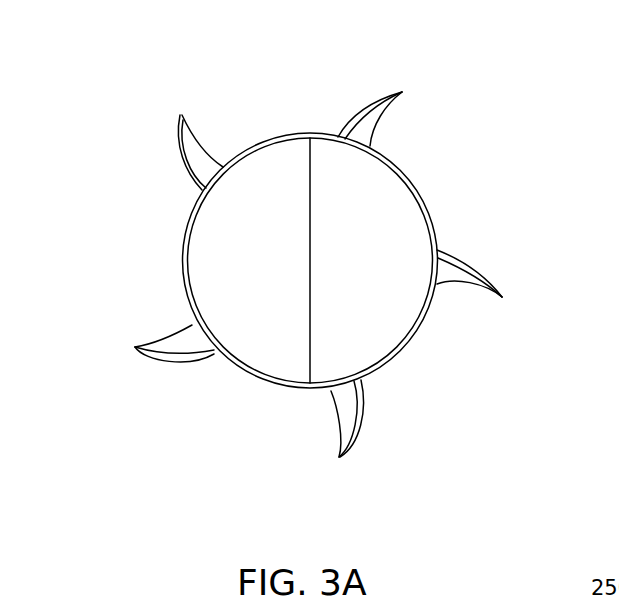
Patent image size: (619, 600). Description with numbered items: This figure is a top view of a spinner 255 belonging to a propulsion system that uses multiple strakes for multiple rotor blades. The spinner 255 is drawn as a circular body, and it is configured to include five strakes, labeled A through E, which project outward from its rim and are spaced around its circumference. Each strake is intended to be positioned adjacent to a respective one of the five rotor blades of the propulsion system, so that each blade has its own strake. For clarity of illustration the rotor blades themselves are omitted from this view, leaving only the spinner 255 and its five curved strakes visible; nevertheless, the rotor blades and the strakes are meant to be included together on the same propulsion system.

The spinner 255 is at (273, 139).